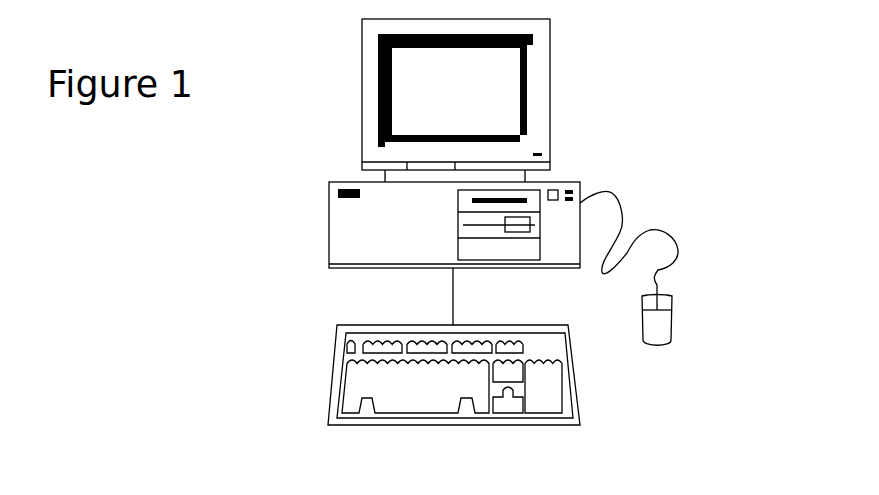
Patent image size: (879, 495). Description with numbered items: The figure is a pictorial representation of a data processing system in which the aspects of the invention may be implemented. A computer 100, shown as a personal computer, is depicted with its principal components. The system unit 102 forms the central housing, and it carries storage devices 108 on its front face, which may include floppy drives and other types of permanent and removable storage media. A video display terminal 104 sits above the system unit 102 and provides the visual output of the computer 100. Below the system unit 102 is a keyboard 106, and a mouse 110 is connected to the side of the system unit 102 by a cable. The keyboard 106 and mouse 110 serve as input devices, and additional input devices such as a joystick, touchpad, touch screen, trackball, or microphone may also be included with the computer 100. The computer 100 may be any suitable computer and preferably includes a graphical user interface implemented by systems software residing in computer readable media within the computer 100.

The computer 100 is at (650, 140).
The system unit 102 is at (555, 268).
The video display terminal 104 is at (550, 69).
The keyboard 106 is at (555, 425).
The storage devices 108 is at (458, 220).
The mouse 110 is at (672, 310).